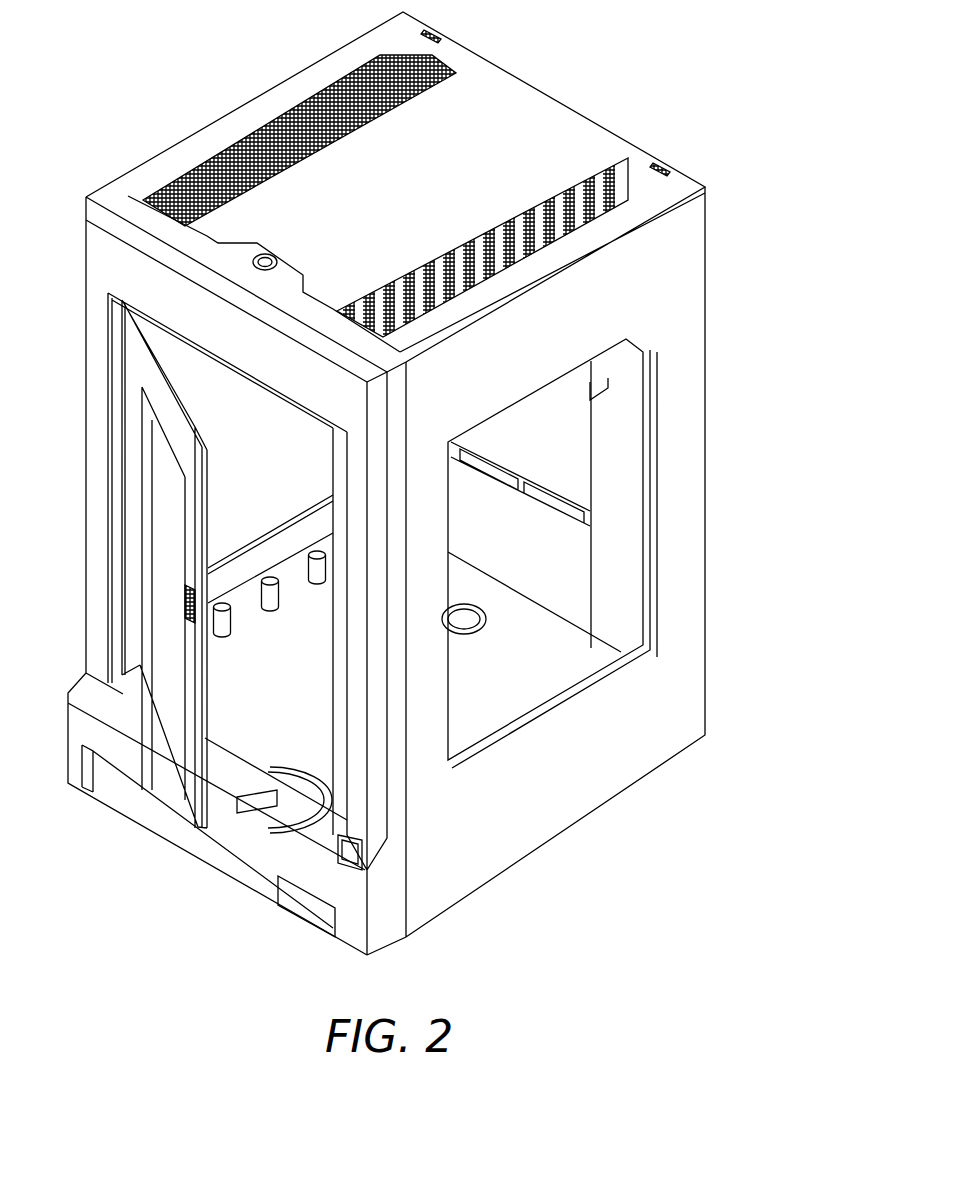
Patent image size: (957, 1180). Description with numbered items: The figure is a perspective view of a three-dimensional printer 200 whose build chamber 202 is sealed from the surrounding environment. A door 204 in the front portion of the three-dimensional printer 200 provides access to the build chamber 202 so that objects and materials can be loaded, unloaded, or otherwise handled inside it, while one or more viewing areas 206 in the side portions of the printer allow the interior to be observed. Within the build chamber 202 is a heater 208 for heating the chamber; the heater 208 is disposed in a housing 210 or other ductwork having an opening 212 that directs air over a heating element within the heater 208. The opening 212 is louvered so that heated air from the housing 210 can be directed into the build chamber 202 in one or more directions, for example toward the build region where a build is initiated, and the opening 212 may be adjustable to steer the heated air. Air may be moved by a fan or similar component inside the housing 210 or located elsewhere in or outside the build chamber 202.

The three-dimensional printer 200 is at (724, 90).
The build chamber 202 is at (268, 463).
The door 204 is at (195, 428).
The viewing area 206 is at (628, 363).
The heater 208 is at (552, 574).
The housing 210 is at (545, 550).
The opening 212 is at (545, 493).